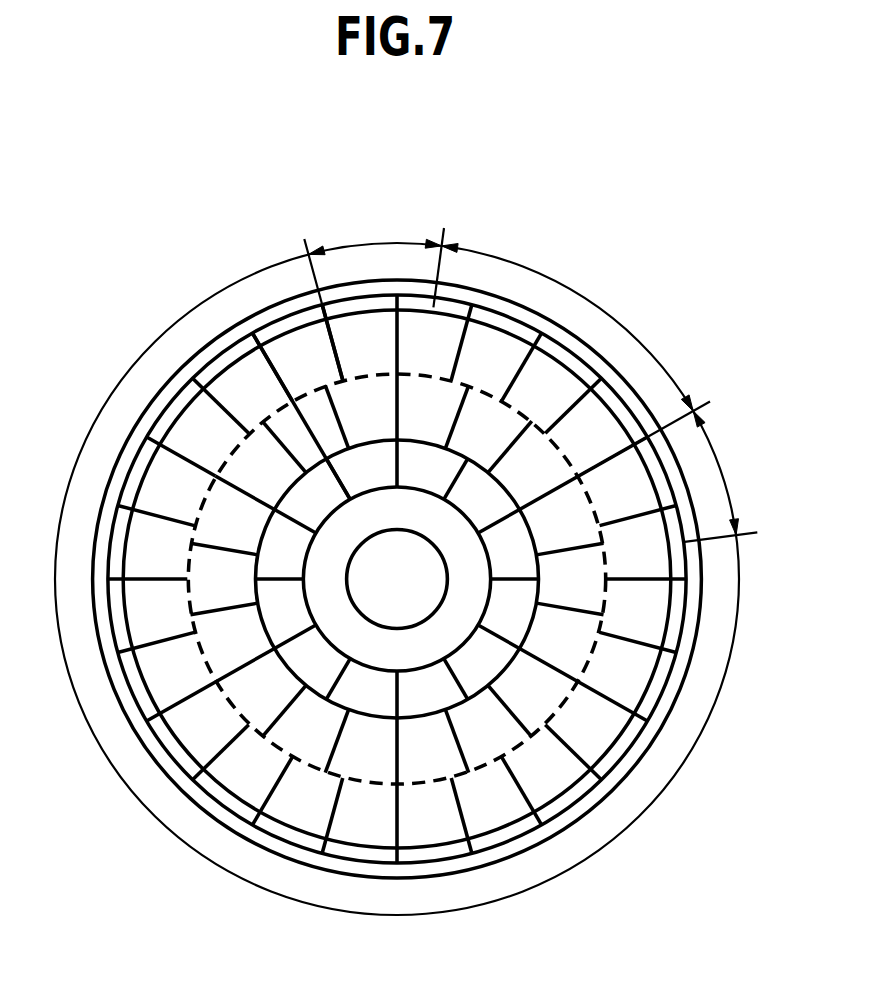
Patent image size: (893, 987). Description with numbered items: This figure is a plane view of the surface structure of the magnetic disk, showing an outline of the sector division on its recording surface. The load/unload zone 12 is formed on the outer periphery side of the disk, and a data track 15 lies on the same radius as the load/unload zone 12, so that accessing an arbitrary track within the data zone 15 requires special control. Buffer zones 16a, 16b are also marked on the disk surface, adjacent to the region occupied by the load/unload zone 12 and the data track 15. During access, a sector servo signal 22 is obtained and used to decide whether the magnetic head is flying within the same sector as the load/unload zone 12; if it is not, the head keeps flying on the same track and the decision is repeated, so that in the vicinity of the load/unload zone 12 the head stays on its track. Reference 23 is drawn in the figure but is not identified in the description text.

The load/unload zone 12 is at (498, 260).
The data track 15 is at (135, 798).
The buffer zone 16a is at (381, 271).
The buffer zone 16b is at (682, 468).
The sector servo signal 22 is at (322, 333).
The slot 23 is at (295, 373).